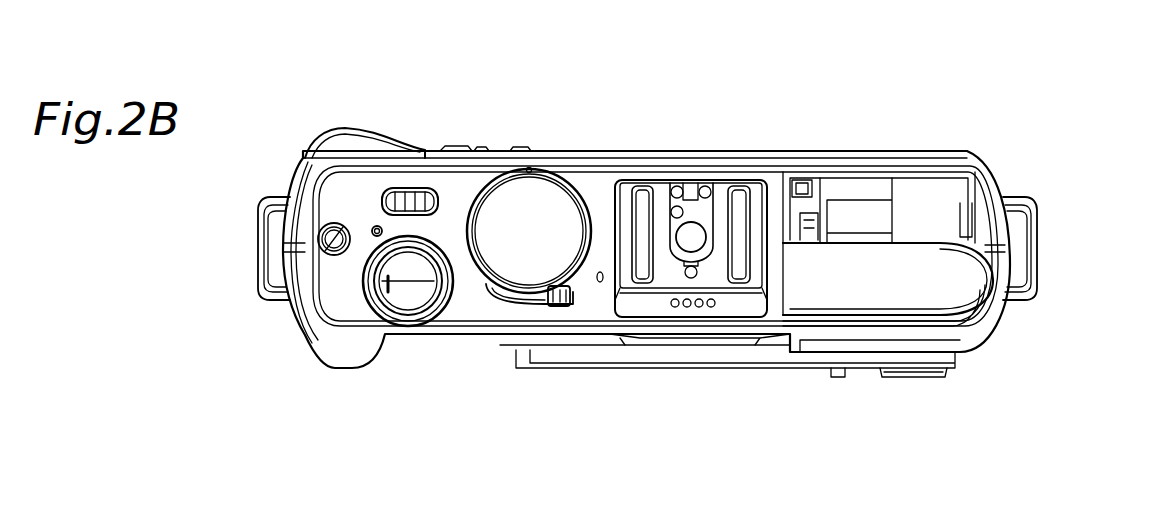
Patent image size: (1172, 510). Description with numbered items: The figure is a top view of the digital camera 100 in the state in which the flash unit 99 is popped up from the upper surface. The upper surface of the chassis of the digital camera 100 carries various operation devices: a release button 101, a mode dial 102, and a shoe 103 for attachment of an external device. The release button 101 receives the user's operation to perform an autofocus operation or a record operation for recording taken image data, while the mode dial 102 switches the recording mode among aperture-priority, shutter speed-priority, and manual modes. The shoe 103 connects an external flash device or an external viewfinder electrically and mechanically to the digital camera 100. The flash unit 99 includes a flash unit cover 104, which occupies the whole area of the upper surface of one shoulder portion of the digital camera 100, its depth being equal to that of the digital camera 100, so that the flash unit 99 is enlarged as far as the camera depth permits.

The flash unit 99 is at (1067, 192).
The digital camera 100 is at (767, 130).
The release button 101 is at (413, 297).
The mode dial 102 is at (535, 223).
The shoe 103 is at (717, 267).
The flash unit cover 104 is at (925, 280).